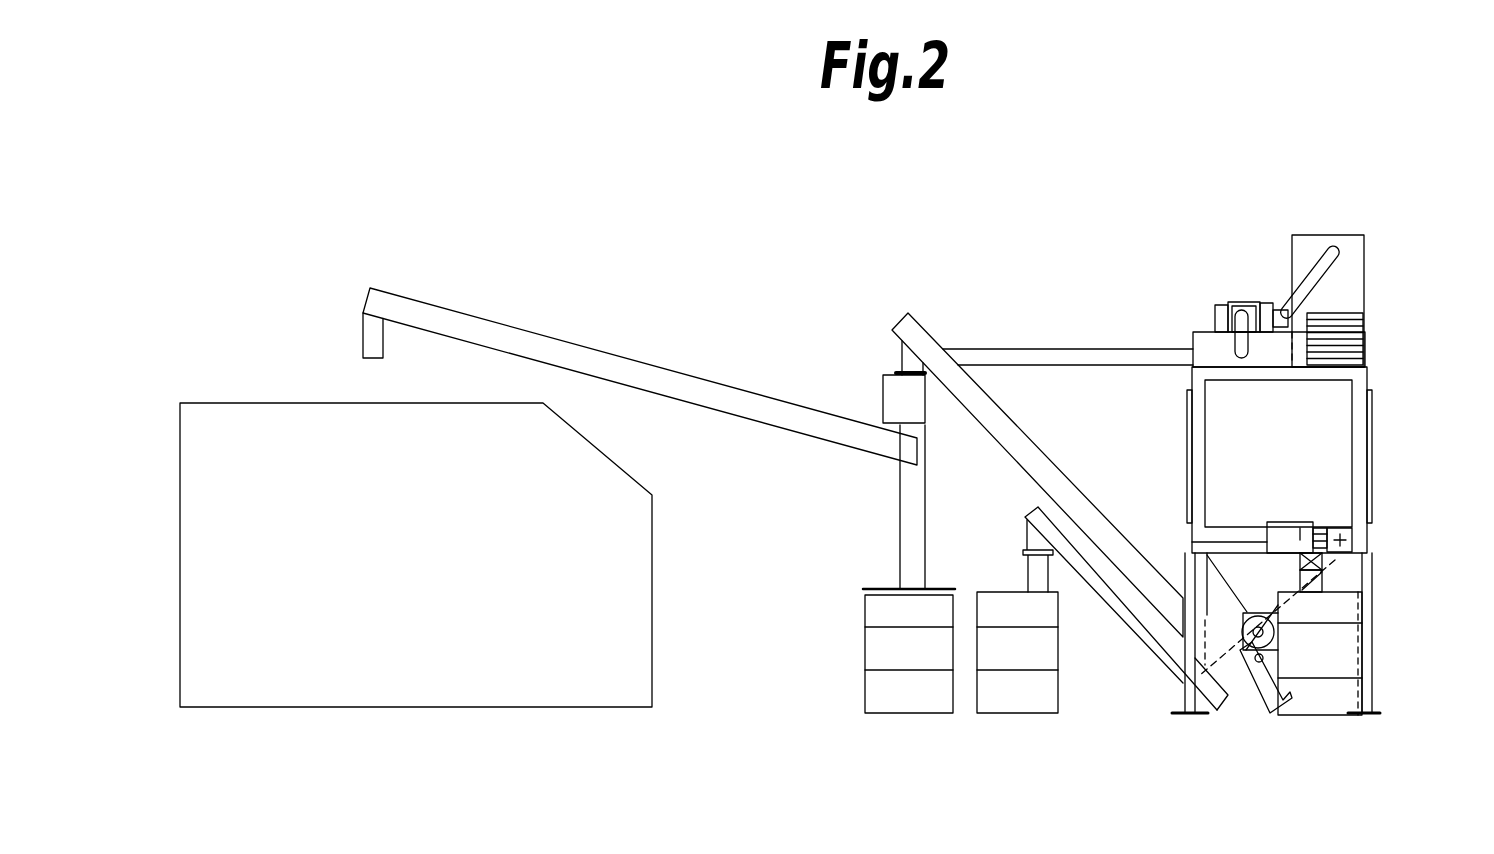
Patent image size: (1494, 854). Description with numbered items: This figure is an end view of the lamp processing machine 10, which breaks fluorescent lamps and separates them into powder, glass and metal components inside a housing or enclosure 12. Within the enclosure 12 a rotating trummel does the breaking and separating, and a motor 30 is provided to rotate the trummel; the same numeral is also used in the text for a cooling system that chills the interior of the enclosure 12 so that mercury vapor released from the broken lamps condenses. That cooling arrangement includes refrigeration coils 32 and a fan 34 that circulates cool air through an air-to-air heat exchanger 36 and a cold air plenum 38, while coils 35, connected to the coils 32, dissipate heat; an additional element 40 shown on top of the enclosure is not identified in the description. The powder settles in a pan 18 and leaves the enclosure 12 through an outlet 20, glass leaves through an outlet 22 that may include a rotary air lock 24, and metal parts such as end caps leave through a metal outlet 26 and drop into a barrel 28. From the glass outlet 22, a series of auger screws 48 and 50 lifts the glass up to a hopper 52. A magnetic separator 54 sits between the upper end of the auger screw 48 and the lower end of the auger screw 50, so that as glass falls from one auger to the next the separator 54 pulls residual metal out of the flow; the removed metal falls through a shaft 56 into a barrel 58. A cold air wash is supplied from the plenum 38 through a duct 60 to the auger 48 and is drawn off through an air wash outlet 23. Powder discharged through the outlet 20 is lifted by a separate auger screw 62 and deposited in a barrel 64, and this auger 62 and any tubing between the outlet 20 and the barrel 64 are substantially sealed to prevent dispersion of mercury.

The lamp processing machine 10 is at (932, 288).
The housing or enclosure 12 is at (1328, 418).
The pan 18 is at (1222, 602).
The outlet 20 is at (1180, 697).
The outlet 22 is at (1273, 645).
The air wash outlet 23 is at (1287, 715).
The rotary air lock 24 is at (1240, 648).
The metal outlet 26 is at (1330, 562).
The barrel 28 is at (1338, 657).
The motor 30 is at (1305, 510).
The refrigeration coils 32 is at (1262, 298).
The fan 34 is at (1225, 298).
The coils 35 is at (1360, 323).
The air-to-air heat exchanger 36 is at (1270, 303).
The cold air plenum 38 is at (1203, 340).
The lever housing 40 is at (1353, 247).
The auger screw 48 is at (1040, 460).
The auger screw 50 is at (618, 367).
The hopper 52 is at (490, 680).
The magnetic separator 54 is at (893, 398).
The shaft 56 is at (907, 532).
The barrel 58 is at (880, 692).
The duct 60 is at (1042, 358).
The auger screw 62 is at (1115, 597).
The barrel 64 is at (998, 693).